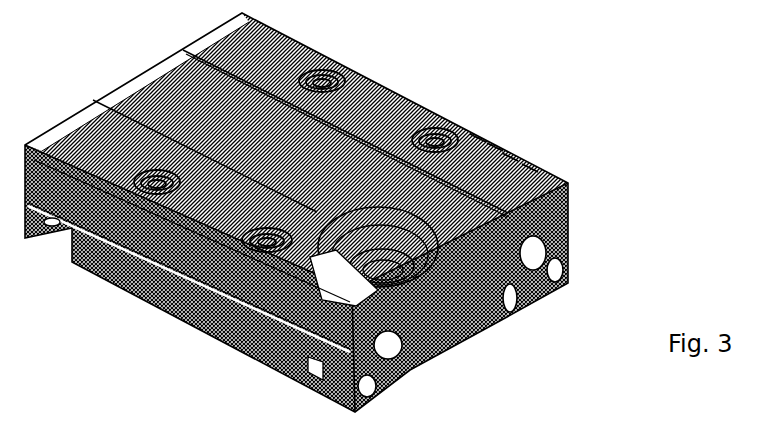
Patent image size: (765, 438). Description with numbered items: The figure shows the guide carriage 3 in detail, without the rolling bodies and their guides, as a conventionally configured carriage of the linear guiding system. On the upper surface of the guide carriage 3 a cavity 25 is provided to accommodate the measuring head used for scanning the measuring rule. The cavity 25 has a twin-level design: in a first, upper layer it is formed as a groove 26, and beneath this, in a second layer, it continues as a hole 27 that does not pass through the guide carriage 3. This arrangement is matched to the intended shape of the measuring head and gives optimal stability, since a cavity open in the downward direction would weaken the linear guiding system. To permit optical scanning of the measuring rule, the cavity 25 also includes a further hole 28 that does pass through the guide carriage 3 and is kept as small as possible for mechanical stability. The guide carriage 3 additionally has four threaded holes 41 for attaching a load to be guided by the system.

The guide carriage 3 is at (127, 80).
The threaded holes 41 is at (443, 118).
The cavity 25 is at (478, 138).
The groove 26 is at (495, 147).
The hole 27 is at (510, 157).
The further hole 28 is at (530, 168).